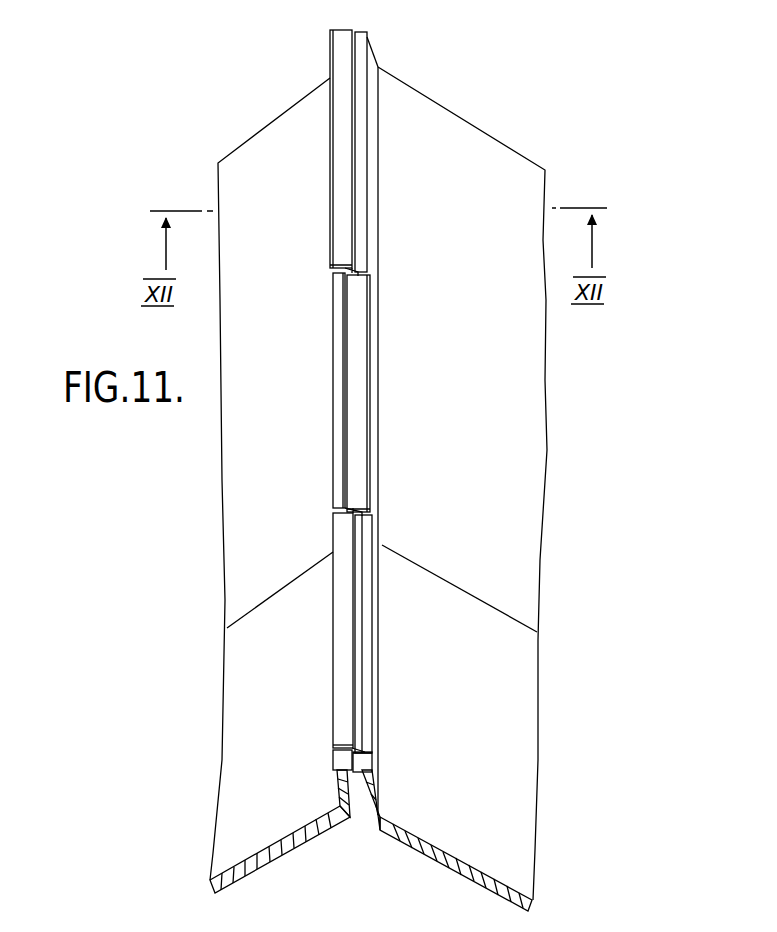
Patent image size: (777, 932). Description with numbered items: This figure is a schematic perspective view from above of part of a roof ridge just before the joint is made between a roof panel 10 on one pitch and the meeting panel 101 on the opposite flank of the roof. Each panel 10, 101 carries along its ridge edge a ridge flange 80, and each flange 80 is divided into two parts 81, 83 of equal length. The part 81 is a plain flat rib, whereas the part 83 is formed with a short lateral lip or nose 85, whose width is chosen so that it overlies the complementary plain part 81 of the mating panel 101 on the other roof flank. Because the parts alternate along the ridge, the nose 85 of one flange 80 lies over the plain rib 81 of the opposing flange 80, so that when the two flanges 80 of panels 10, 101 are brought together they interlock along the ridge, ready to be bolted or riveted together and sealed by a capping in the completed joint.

The panel 10 is at (214, 509).
The adjacent wall panel 101 is at (549, 487).
The ridge flange 80 is at (357, 798).
The plain flat rib 81 is at (375, 199).
The flange part with nose 83 is at (330, 200).
The nose 85 is at (355, 275).